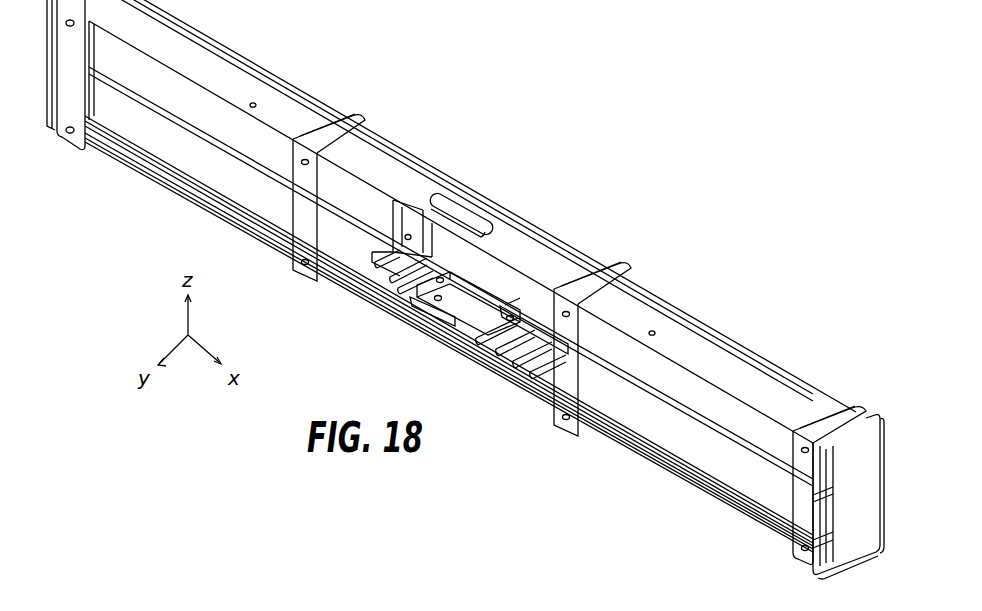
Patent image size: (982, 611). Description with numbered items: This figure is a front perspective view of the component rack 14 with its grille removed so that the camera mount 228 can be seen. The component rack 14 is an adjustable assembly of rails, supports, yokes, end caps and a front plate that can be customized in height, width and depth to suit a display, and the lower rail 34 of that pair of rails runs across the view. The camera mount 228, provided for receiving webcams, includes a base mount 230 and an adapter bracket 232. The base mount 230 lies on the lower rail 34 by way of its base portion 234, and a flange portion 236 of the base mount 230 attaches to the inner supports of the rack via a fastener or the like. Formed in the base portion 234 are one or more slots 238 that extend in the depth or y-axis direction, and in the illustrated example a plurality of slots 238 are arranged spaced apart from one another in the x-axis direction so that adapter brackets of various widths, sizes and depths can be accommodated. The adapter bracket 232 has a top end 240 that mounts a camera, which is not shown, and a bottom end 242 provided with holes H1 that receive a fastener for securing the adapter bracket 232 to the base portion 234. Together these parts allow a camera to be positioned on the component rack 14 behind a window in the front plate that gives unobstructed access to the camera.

The component rack 14 is at (817, 343).
The lower rail 34 is at (677, 433).
The camera mount 228 is at (417, 329).
The base mount 230 is at (385, 265).
The adapter bracket 232 is at (462, 325).
The base portion 234 is at (528, 320).
The flange portion 236 is at (407, 237).
The slots 238 is at (413, 272).
The top end 240 is at (440, 322).
The bottom end 242 is at (418, 293).
The holes H1 is at (512, 298).